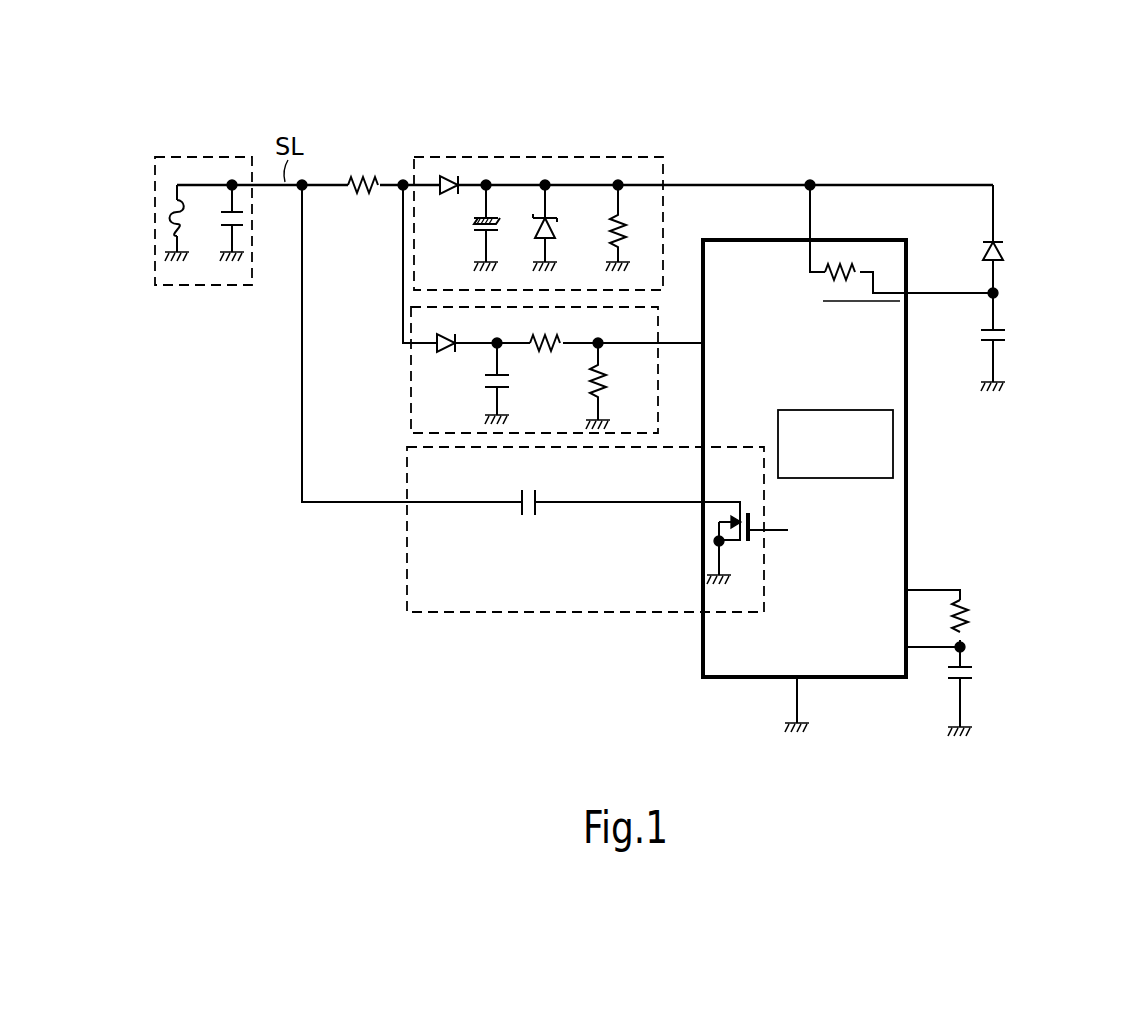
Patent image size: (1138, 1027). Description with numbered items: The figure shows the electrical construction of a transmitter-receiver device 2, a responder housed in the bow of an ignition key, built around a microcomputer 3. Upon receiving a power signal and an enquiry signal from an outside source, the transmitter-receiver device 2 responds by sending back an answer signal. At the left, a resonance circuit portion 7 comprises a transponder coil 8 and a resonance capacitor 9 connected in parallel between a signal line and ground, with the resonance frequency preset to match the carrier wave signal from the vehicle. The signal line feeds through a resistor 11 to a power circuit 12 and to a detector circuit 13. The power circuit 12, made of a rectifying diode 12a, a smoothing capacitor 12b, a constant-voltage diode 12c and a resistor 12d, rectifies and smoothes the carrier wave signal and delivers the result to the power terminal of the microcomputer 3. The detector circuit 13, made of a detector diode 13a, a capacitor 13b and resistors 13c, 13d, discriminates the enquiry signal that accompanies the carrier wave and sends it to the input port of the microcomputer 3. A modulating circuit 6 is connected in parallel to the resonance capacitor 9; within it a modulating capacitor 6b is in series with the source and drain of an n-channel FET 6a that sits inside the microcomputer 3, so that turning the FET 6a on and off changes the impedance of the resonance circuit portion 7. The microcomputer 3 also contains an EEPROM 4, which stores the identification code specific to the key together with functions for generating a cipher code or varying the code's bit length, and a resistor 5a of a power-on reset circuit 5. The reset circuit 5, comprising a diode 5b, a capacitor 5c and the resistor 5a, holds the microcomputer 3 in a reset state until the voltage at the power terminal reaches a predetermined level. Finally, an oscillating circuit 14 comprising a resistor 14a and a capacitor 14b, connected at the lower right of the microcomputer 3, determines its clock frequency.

The transmitter-receiver device 2 is at (752, 162).
The microcomputer 3 is at (725, 679).
The EEPROM 4 is at (893, 432).
The power-on reset circuit 5 is at (1010, 293).
The resistor 5a is at (847, 243).
The diode 5b is at (1006, 243).
The capacitor 5c is at (1006, 335).
The modulating circuit 6 is at (443, 612).
The n-channel FET 6a is at (706, 528).
The modulating capacitor 6b is at (528, 515).
The resonance circuit portion 7 is at (200, 155).
The transponder coil 8 is at (168, 232).
The resonance capacitor 9 is at (212, 222).
The resistor 11 is at (362, 178).
The power circuit 12 is at (590, 155).
The rectifying diode 12a is at (450, 172).
The smoothing capacitor 12b is at (470, 225).
The constant-voltage diode 12c is at (556, 232).
The resistor 12d is at (610, 238).
The detector circuit 13 is at (410, 365).
The detector diode 13a is at (462, 353).
The capacitor 13b is at (510, 383).
The resistor 13c is at (546, 352).
The resistor 13d is at (622, 385).
The oscillating circuit 14 is at (1020, 643).
The resistor 14a is at (968, 630).
The capacitor 14b is at (972, 680).